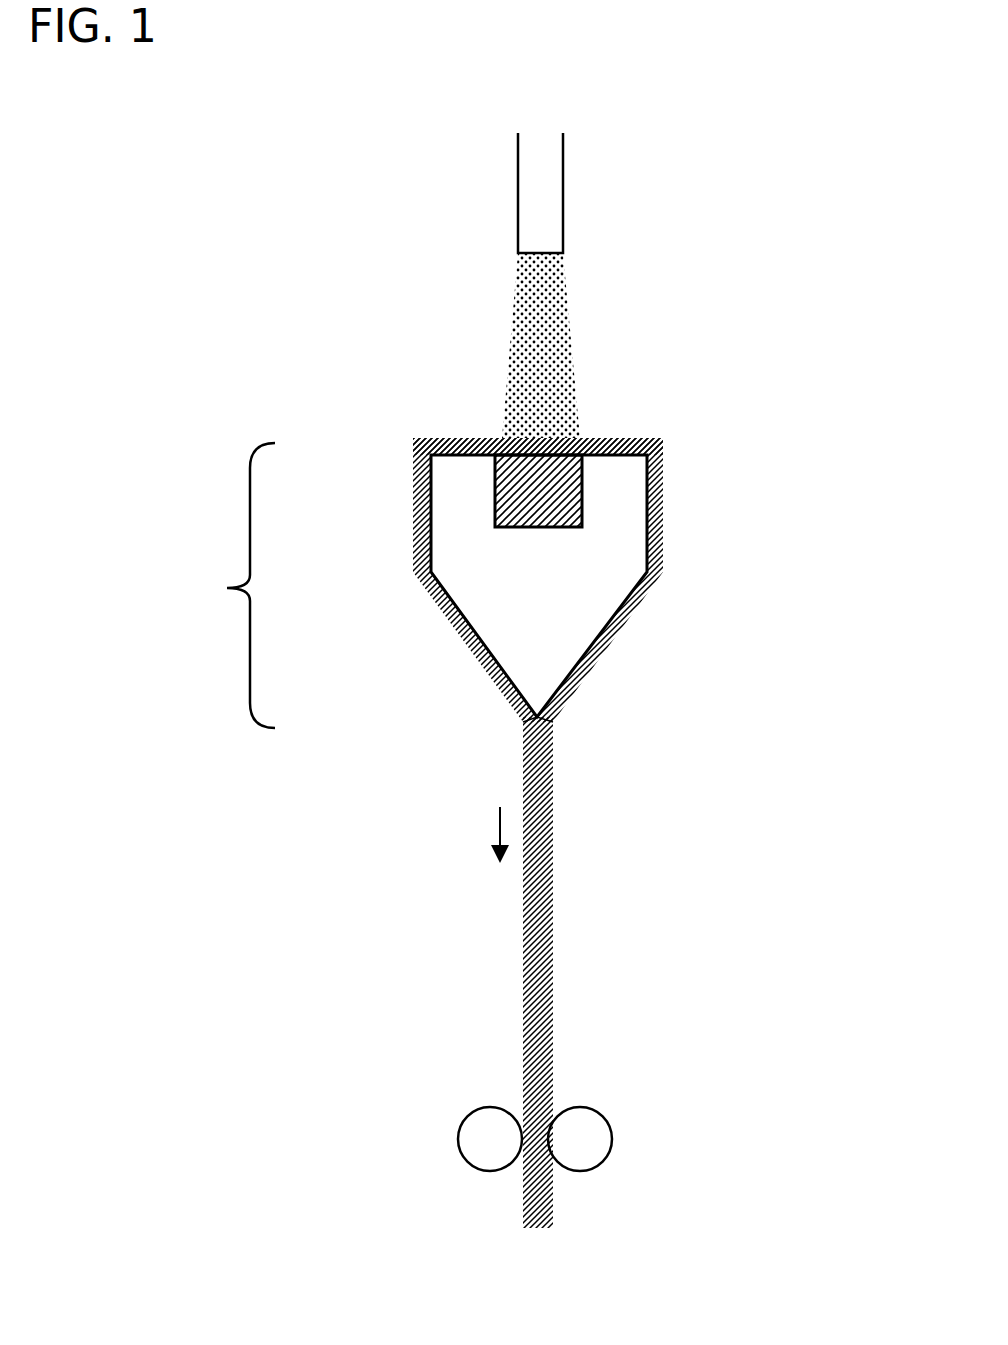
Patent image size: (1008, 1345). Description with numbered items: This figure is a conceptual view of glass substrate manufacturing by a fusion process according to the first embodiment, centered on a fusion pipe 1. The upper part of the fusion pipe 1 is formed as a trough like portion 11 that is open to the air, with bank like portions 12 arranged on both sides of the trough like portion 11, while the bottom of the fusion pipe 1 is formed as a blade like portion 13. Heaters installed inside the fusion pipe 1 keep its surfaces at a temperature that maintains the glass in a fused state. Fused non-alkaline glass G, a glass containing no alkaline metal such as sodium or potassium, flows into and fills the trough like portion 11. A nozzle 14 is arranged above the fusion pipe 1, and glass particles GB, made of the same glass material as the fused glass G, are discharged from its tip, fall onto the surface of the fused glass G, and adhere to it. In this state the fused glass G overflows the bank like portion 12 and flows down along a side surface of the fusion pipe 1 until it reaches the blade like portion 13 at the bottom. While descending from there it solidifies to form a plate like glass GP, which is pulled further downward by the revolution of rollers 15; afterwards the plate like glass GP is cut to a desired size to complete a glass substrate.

The fusion pipe 1 is at (231, 585).
The trough like portion 11 is at (585, 500).
The bank like portions 12 is at (465, 455).
The blade like portion 13 is at (540, 705).
The nozzle 14 is at (552, 177).
The rollers 15 is at (600, 1140).
The fused non-alkaline glass G is at (587, 440).
The glass particles GB is at (552, 281).
The plate like glass GP is at (542, 797).